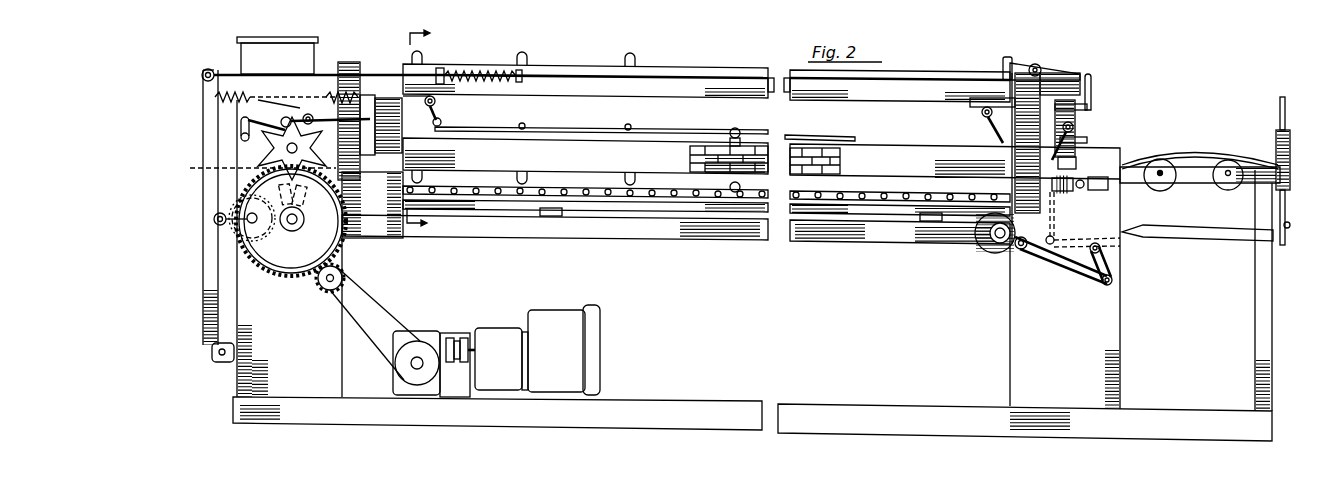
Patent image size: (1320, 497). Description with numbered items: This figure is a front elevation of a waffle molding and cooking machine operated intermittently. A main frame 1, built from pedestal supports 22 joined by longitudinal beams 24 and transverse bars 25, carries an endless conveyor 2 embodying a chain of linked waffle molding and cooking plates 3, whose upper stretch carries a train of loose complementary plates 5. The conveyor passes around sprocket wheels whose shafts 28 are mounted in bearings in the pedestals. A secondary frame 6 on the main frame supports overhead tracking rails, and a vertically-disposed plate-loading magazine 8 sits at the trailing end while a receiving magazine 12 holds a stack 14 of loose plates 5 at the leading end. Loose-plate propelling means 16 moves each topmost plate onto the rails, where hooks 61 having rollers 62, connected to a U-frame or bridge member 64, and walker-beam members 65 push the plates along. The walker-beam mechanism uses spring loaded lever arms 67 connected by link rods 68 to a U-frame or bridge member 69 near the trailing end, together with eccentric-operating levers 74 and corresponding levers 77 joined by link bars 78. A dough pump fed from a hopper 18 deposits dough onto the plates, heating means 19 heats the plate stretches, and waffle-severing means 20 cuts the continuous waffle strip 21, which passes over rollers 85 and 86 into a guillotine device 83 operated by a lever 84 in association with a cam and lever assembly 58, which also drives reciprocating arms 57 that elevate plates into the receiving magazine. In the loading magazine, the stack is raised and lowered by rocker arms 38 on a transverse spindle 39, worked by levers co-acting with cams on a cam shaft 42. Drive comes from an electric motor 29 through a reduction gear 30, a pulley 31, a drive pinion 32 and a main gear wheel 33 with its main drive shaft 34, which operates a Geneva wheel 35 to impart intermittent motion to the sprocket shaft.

The main frame 1 is at (633, 402).
The endless conveyor 2 is at (843, 195).
The linked waffle molding and cooking plates 3 is at (409, 129).
The loose complementary waffle molding and cooking plates 5 is at (815, 150).
The secondary frame 6 is at (472, 65).
The plate-loading magazine 8 is at (352, 82).
The receiving magazine 12 is at (1088, 106).
The stack of loose plates 14 is at (1088, 122).
The loose-plate propelling means 16 is at (1085, 72).
The hopper 18 is at (247, 62).
The heating means 19 is at (738, 128).
The waffle-severing means 20 is at (1278, 135).
The continuous waffle strip 21 is at (1200, 167).
The pedestal supports 22 is at (320, 248).
The longitudinal beams 24 is at (580, 225).
The transverse bars 25 is at (551, 217).
The shafts 28 is at (253, 168).
The electric motor 29 is at (590, 368).
The reduction gear 30 is at (446, 336).
The pulley 31 is at (417, 353).
The drive pinion 32 is at (323, 284).
The main gear wheel 33 is at (290, 277).
The main drive shaft 34 is at (293, 234).
The Geneva wheel 35 is at (247, 143).
The rocker arms 38 is at (330, 135).
The transverse spindle 39 is at (240, 136).
The cam shaft 42 is at (216, 224).
The reciprocating arms 57 is at (1078, 136).
The cam and lever assembly 58 is at (1040, 250).
The hooks 61 is at (1050, 71).
The rollers 62 is at (1035, 64).
The U-frame or bridge member 64 is at (1007, 58).
The walker-beam members 65 is at (786, 94).
The spring loaded lever arms 67 is at (213, 250).
The link rods 68 is at (232, 72).
The U-frame or bridge member 69 is at (445, 70).
The eccentric-operating levers 74 is at (442, 115).
The eccentric-operating levers 77 is at (987, 127).
The link bars 78 is at (485, 130).
The guillotine device 83 is at (1280, 120).
The lever 84 is at (1185, 238).
The roller 85 is at (1168, 162).
The roller 86 is at (1230, 162).